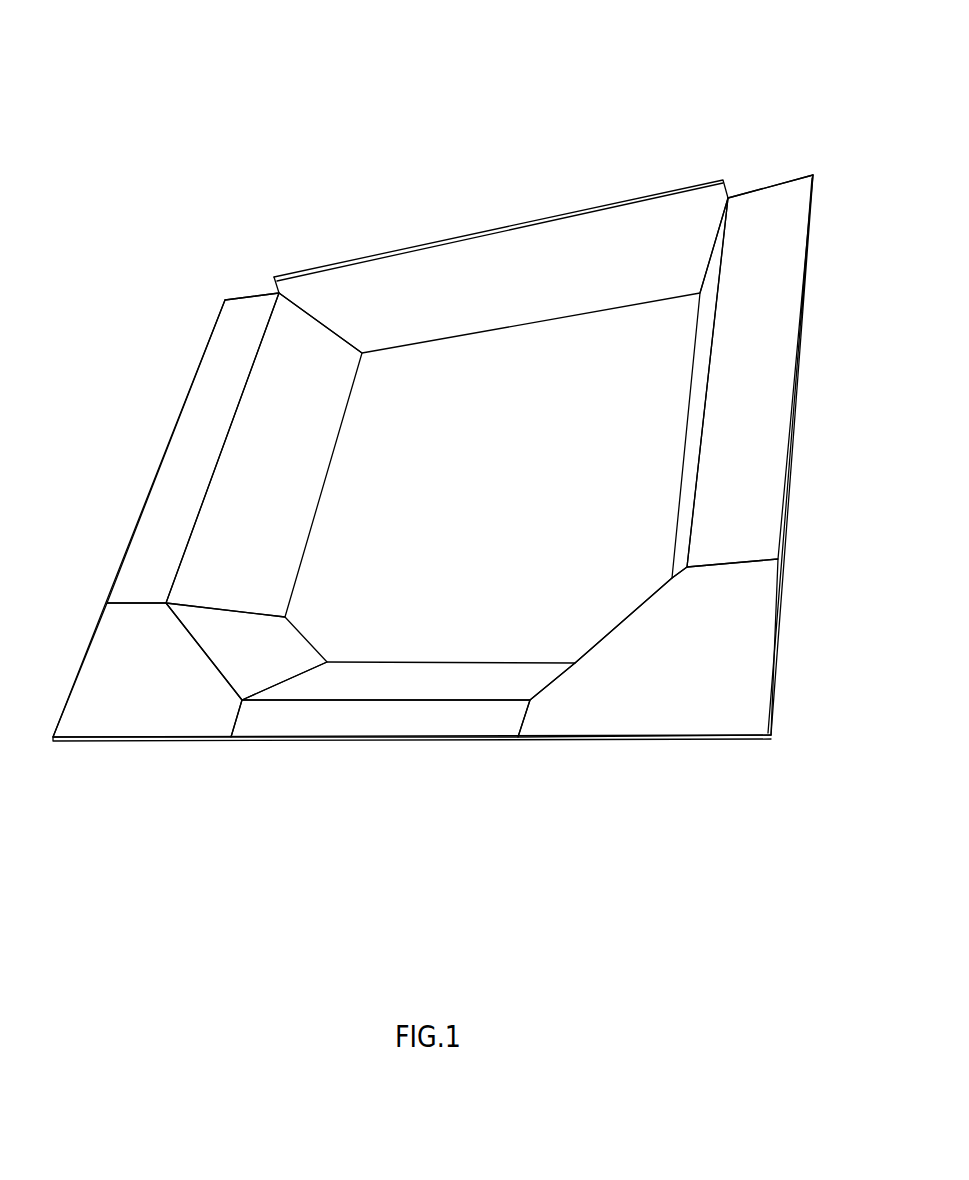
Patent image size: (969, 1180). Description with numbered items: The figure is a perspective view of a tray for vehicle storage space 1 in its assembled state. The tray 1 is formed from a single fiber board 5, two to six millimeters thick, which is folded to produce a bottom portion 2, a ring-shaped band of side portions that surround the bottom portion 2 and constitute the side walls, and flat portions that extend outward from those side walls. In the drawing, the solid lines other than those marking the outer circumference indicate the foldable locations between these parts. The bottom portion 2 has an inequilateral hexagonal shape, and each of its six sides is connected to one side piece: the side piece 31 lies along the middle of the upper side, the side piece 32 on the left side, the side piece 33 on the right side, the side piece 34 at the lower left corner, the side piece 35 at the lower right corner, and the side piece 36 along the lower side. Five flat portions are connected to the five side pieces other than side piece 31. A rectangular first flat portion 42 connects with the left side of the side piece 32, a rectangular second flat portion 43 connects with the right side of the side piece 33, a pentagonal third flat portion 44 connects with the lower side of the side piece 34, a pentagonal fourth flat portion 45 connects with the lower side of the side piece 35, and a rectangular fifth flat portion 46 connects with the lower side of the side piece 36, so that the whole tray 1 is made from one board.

The tray for vehicle storage space 1 is at (713, 80).
The bottom portion 2 is at (458, 400).
The fiber board 5 is at (250, 295).
The side piece 31 is at (584, 283).
The side piece 32 is at (280, 382).
The side piece 33 is at (698, 380).
The side piece 34 is at (230, 650).
The side piece 35 is at (627, 617).
The side piece 36 is at (348, 687).
The first flat portion 42 is at (190, 432).
The second flat portion 43 is at (770, 415).
The third flat portion 44 is at (118, 720).
The fourth flat portion 45 is at (760, 620).
The fifth flat portion 46 is at (465, 720).